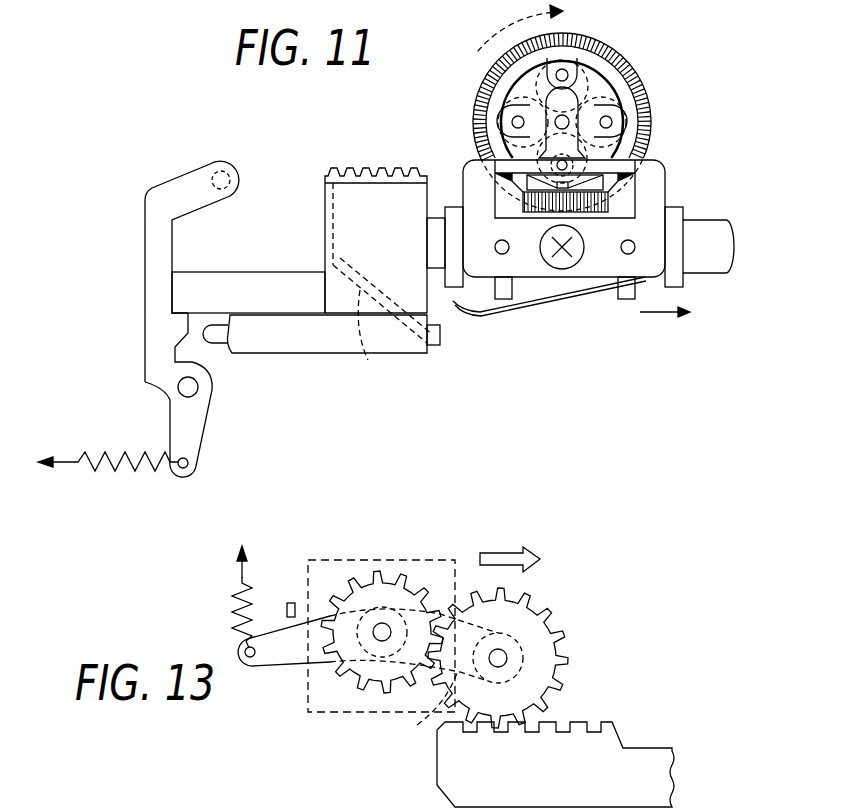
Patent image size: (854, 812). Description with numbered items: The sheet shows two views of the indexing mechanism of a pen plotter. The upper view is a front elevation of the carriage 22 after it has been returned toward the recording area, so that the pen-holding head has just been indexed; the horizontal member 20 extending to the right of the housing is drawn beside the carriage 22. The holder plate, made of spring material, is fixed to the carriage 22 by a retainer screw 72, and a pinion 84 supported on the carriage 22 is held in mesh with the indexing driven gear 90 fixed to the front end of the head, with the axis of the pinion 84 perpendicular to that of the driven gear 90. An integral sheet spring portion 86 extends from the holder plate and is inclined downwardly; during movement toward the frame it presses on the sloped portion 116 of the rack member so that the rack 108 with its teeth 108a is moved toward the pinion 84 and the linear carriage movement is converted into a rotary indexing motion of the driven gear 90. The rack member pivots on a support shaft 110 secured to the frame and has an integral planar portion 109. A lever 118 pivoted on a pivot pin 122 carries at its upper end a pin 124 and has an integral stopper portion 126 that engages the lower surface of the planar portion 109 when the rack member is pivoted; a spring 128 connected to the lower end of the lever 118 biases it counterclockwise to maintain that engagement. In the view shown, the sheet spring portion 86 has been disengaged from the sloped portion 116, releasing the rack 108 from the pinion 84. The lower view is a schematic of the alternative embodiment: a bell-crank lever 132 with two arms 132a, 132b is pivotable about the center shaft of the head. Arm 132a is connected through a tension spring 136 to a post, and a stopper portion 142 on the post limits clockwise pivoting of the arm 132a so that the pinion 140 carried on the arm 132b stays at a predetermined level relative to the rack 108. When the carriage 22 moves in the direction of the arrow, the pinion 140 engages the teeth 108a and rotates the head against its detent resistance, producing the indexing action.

In FIG. 11, the shaft 20 is at (708, 262).
In FIG. 13, the carriage 22 is at (348, 558).
In FIG. 11, the retainer screw 72 is at (566, 262).
In FIG. 11, the pinion 84 is at (610, 205).
In FIG. 11, the sheet spring portion 86 is at (510, 316).
In FIG. 11, the indexing driven gear 90 is at (600, 68).
In FIG. 13, the indexing driven gear 90 is at (395, 572).
In FIG. 13, the rack 108 is at (613, 740).
In FIG. 11, the rack teeth 108a is at (380, 168).
In FIG. 11, the planar portion 109 is at (265, 282).
In FIG. 11, the support shaft 110 is at (442, 335).
In FIG. 11, the sloped portion 116 is at (317, 286).
In FIG. 11, the lever 118 is at (187, 296).
In FIG. 11, the pivot pin 122 is at (180, 392).
In FIG. 11, the pin 124 is at (217, 170).
In FIG. 11, the stopper portion 126 is at (177, 332).
In FIG. 11, the spring 128 is at (125, 480).
In FIG. 13, the bell-crank lever 132 is at (368, 683).
In FIG. 13, the arm 132a is at (275, 661).
In FIG. 13, the arm 132b is at (419, 722).
In FIG. 13, the tension spring 136 is at (235, 600).
In FIG. 13, the pinion 140 is at (563, 632).
In FIG. 13, the stopper portion 142 is at (289, 601).